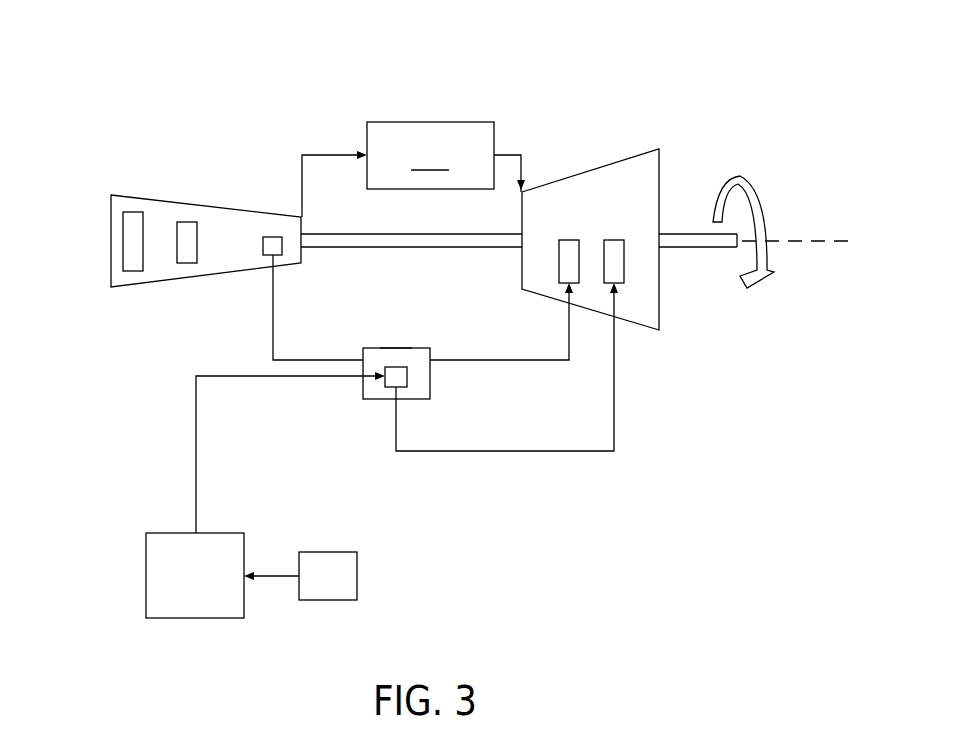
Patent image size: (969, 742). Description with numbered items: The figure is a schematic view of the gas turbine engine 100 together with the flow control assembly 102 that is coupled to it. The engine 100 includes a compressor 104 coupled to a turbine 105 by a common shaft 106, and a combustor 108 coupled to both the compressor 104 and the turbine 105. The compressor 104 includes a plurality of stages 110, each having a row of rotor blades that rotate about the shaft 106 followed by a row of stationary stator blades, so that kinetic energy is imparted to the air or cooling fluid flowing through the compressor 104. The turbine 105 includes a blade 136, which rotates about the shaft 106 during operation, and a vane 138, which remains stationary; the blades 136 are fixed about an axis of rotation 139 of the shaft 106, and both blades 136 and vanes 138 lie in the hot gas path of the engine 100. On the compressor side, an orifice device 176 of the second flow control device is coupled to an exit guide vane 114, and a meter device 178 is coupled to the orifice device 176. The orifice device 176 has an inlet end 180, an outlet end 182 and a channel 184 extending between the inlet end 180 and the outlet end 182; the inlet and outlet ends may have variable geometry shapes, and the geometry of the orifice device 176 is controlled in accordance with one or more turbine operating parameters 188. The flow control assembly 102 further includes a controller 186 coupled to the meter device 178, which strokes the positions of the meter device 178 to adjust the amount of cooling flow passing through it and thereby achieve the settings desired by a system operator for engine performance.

The gas turbine engine 100 is at (204, 41).
The flow control assembly 102 is at (433, 406).
The compressor 104 is at (110, 240).
The turbine 105 is at (647, 153).
The common shaft 106 is at (337, 233).
The combustor 108 is at (413, 169).
The stages 110 is at (157, 197).
The exit guide vane 114 is at (273, 237).
The blade 136 is at (614, 240).
The vane 138 is at (569, 240).
The axis of rotation 139 is at (768, 214).
The orifice device 176 is at (432, 383).
The meter device 178 is at (383, 389).
The inlet end 180 is at (363, 351).
The outlet end 182 is at (432, 350).
The channel 184 is at (395, 348).
The controller 186 is at (163, 533).
The turbine operating parameters 188 is at (327, 552).